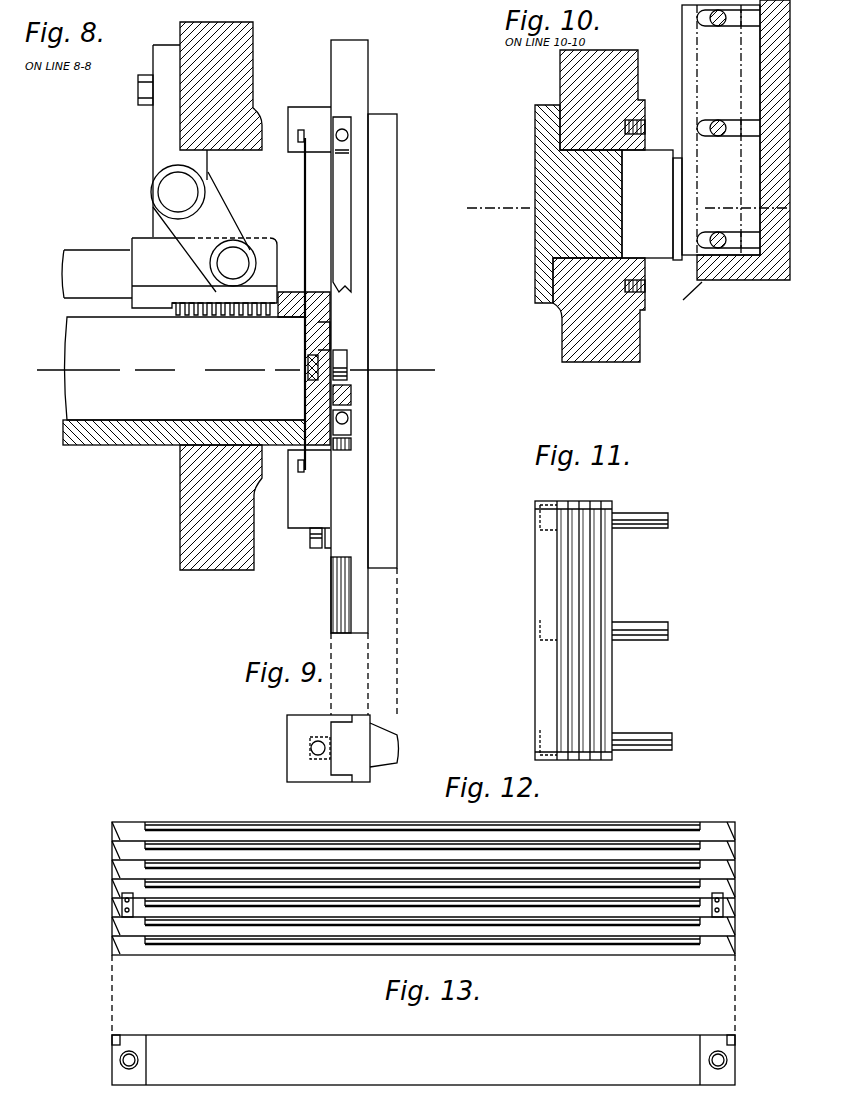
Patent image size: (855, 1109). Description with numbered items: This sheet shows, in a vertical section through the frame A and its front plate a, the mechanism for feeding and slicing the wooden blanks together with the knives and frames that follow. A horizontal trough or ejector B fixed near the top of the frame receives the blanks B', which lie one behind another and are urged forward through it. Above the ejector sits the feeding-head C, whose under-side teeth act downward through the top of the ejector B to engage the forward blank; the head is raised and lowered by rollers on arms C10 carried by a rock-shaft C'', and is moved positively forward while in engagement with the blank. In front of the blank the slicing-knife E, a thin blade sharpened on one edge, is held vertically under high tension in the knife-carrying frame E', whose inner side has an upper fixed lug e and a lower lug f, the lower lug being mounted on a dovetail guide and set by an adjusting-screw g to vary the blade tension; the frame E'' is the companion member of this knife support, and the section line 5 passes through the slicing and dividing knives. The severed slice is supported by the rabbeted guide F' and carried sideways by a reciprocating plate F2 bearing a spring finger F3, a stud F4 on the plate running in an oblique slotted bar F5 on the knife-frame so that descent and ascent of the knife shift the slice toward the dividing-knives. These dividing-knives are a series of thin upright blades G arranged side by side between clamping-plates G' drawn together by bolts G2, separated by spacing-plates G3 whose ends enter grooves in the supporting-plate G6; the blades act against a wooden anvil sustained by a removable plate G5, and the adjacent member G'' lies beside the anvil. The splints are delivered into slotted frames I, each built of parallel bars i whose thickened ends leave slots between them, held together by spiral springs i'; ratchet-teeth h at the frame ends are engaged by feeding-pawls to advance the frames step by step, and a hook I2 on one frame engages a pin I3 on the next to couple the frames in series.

In FIG. 8, the main frame A is at (285, 75).
In FIG. 10, the main frame A is at (550, 78).
In FIG. 8, the front plate a is at (221, 296).
In FIG. 10, the front plate a is at (599, 206).
In FIG. 8, the ejector B is at (184, 447).
In FIG. 10, the ejector B is at (578, 204).
In FIG. 8, the blanks B' is at (185, 368).
In FIG. 8, the feeding-head C is at (169, 276).
In FIG. 8, the rock-shaft C'' is at (178, 192).
In FIG. 8, the arms C10 is at (204, 232).
In FIG. 8, the upper lug e is at (314, 123).
In FIG. 8, the slicing-knife E is at (303, 317).
In FIG. 8, the knife-carrying frame E' is at (361, 377).
In FIG. 9, the knife-carrying frame E' is at (343, 748).
In FIG. 8, the guide bar E'' is at (340, 341).
In FIG. 8, the lower guide F' is at (312, 375).
In FIG. 8, the reciprocating plate F2 is at (316, 340).
In FIG. 8, the spring finger F3 is at (306, 372).
In FIG. 8, the stud F4 is at (340, 348).
In FIG. 8, the oblique slotted bar F5 is at (346, 198).
In FIG. 8, the lower lug f is at (295, 495).
In FIG. 9, the lower lug f is at (296, 730).
In FIG. 8, the adjusting-screw g is at (310, 540).
In FIG. 9, the adjusting-screw g is at (315, 750).
In FIG. 8, the section line 5 is at (237, 367).
In FIG. 10, the section line 5 is at (634, 204).
In FIG. 10, the dividing-knives G is at (736, 140).
In FIG. 11, the dividing-knives G is at (574, 630).
In FIG. 10, the clamping-plates G' is at (724, 131).
In FIG. 11, the clamping-plates G' is at (584, 630).
In FIG. 10, the block G'' is at (652, 206).
In FIG. 10, the bolts G2 is at (718, 228).
In FIG. 11, the bolts G2 is at (652, 735).
In FIG. 11, the spacing-plates G3 is at (575, 652).
In FIG. 10, the removable plate G5 is at (560, 208).
In FIG. 10, the supporting-plate G6 is at (688, 300).
In FIG. 12, the slotted frames I is at (130, 815).
In FIG. 13, the slotted frames I is at (158, 1030).
In FIG. 12, the hook I2 is at (422, 898).
In FIG. 12, the pin I3 is at (421, 930).
In FIG. 12, the parallel bars i is at (423, 887).
In FIG. 13, the parallel bars i is at (388, 1076).
In FIG. 13, the spiral springs i' is at (421, 1060).
In FIG. 12, the ratchet-teeth h is at (112, 850).
In FIG. 13, the ratchet-teeth h is at (112, 1040).